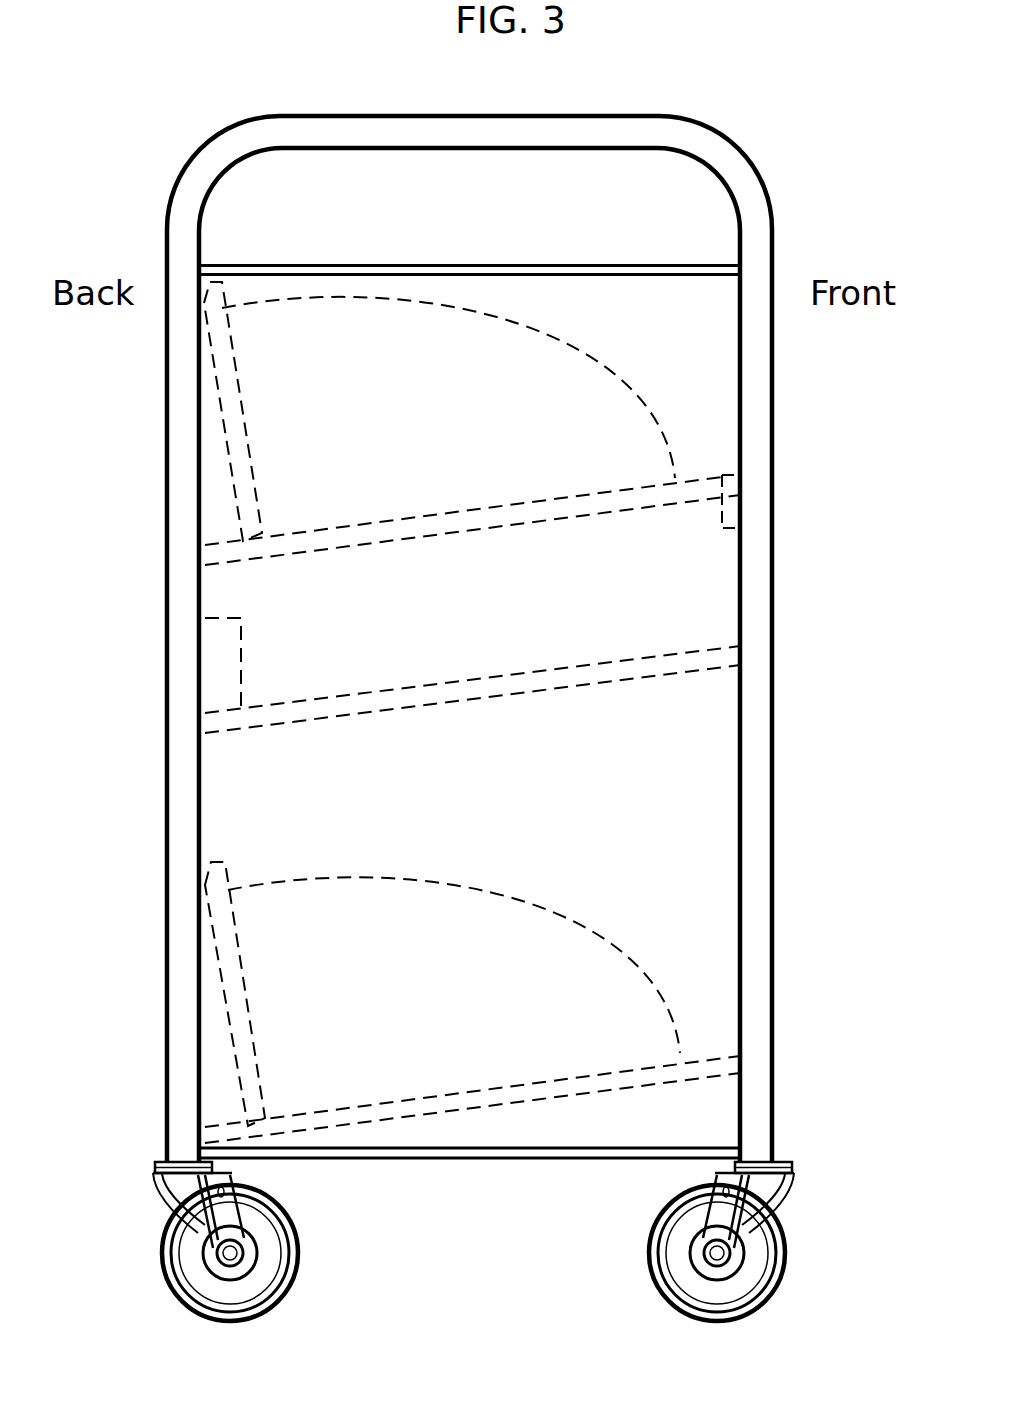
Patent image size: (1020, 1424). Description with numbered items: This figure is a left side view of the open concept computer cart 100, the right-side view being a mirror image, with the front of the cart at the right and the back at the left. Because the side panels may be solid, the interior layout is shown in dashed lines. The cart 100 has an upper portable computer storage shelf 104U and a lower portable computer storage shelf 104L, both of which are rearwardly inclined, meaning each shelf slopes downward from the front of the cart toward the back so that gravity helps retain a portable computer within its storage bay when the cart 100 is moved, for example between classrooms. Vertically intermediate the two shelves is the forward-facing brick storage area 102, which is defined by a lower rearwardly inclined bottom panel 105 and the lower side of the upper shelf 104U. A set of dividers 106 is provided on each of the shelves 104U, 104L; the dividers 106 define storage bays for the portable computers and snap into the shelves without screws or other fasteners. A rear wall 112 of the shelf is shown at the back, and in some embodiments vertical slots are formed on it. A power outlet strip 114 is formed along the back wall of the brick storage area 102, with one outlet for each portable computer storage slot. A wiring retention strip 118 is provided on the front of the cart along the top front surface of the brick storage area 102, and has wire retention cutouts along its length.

The open concept computer cart 100 is at (769, 124).
The forward-facing brick storage area 102 is at (656, 613).
The upper portable computer storage shelf 104U is at (705, 338).
The lower portable computer storage shelf 104L is at (695, 748).
The rearwardly inclined bottom panel 105 is at (452, 688).
The dividers 106 is at (467, 293).
The rear wall 112 is at (244, 473).
The power outlet strip 114 is at (232, 637).
The wiring retention strip 118 is at (732, 504).